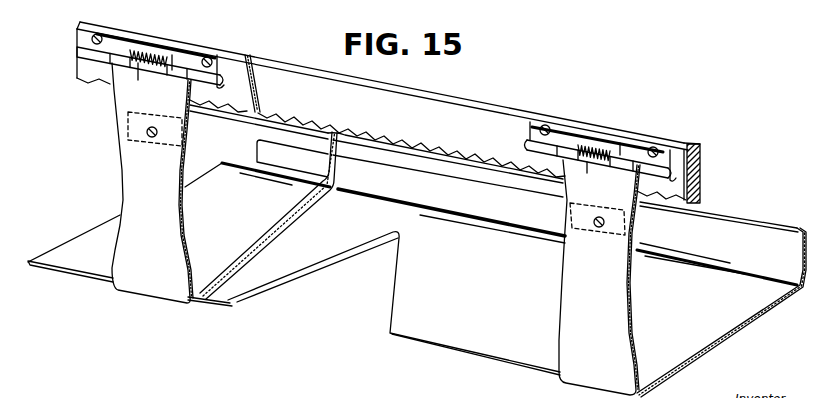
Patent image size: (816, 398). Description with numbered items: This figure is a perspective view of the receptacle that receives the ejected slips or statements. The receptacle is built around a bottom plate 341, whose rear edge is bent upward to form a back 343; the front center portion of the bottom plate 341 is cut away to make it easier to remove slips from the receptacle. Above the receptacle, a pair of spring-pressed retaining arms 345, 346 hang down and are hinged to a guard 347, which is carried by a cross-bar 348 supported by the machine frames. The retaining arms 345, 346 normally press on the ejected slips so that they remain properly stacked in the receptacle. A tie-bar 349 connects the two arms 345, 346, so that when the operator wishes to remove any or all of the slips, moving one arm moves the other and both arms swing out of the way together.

The bottom plate 341 is at (435, 333).
The back 343 is at (720, 223).
The retaining arm 345 is at (128, 176).
The retaining arm 346 is at (577, 285).
The guard 347 is at (495, 119).
The cross-bar 348 is at (571, 118).
The tie-bar 349 is at (502, 207).